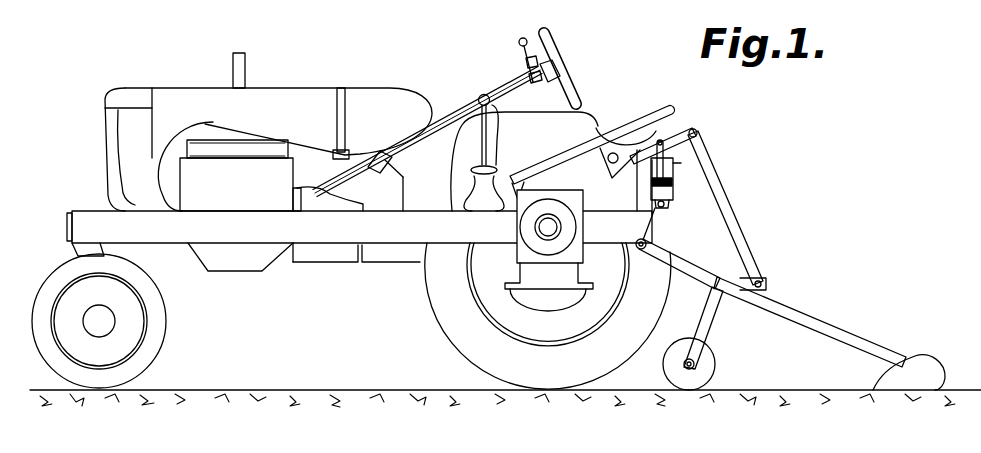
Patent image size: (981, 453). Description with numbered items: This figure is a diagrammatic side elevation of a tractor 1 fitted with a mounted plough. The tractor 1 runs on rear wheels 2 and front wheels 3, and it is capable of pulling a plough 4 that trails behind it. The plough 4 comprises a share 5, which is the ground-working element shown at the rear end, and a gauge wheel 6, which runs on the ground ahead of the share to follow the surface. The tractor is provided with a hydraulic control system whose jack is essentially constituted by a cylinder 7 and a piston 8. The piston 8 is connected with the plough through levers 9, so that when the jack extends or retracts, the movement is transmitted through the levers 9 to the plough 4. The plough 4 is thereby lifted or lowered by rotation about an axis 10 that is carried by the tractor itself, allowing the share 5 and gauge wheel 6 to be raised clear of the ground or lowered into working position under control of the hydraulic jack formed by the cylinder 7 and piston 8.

The tractor 1 is at (377, 228).
The rear wheels 2 is at (463, 359).
The front wheels 3 is at (137, 365).
The plough 4 is at (807, 318).
The share 5 is at (925, 372).
The gauge wheel 6 is at (693, 382).
The cylinder 7 is at (675, 191).
The piston 8 is at (675, 178).
The levers 9 is at (698, 146).
The axis 10 is at (648, 242).